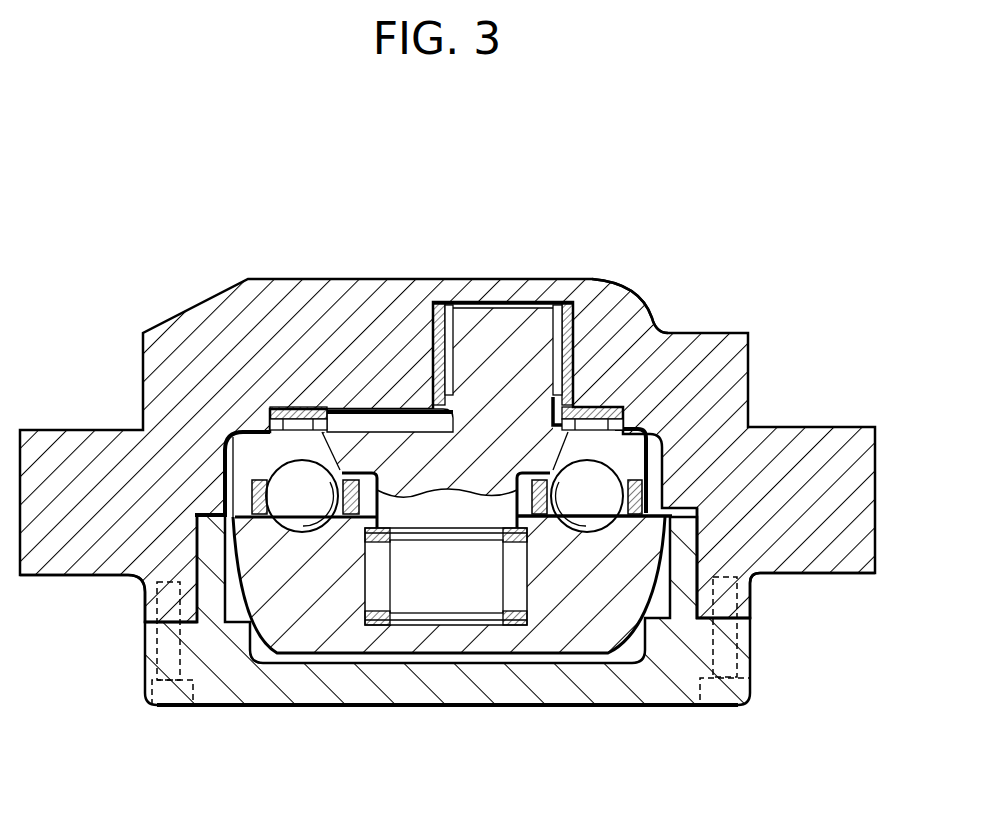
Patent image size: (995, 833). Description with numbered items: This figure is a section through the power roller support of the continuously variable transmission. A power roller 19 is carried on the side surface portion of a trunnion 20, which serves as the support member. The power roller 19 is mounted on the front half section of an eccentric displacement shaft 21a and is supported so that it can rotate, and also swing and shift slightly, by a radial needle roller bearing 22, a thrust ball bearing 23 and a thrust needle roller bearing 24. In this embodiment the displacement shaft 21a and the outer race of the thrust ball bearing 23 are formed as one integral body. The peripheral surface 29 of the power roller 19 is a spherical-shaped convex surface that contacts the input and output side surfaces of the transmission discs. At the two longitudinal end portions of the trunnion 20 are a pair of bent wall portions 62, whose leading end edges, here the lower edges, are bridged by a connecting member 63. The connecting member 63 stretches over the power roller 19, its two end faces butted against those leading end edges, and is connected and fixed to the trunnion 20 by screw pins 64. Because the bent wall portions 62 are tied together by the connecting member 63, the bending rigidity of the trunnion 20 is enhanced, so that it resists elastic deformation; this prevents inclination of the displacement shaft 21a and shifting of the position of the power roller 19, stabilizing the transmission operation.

The power roller 19 is at (330, 613).
The trunnion 20 is at (397, 310).
The displacement shaft 21a is at (500, 333).
The radial needle roller bearing 22 is at (512, 587).
The thrust ball bearing 23 is at (302, 470).
The thrust needle roller bearing 24 is at (657, 328).
The peripheral surface 29 is at (247, 630).
The bent wall portion 62 is at (140, 575).
The connecting member 63 is at (568, 685).
The screw pin 64 is at (157, 645).